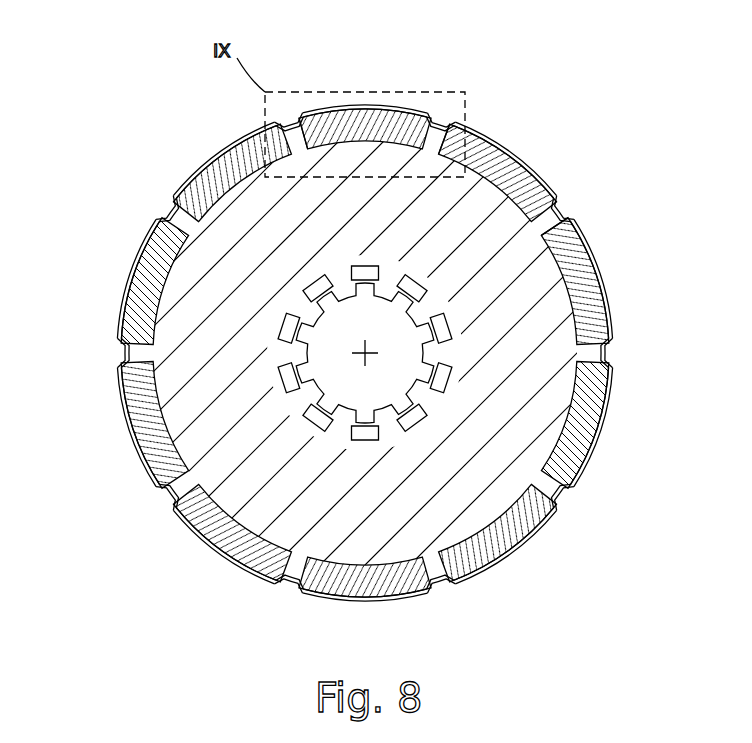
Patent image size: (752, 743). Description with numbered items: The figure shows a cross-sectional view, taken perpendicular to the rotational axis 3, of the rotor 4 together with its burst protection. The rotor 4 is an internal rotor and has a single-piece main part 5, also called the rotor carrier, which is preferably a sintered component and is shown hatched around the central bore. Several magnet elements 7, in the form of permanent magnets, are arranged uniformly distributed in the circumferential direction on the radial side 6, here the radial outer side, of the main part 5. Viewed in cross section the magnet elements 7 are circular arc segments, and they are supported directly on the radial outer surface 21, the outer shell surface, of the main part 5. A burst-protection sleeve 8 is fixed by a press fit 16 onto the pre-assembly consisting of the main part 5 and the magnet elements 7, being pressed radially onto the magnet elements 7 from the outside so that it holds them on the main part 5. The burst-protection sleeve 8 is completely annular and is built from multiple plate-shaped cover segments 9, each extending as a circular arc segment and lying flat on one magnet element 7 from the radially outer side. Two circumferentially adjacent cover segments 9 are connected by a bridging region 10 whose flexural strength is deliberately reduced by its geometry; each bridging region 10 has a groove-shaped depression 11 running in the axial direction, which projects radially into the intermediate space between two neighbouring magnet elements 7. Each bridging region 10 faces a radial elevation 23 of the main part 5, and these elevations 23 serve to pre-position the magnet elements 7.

The rotational axis 3 is at (380, 348).
The rotor 4 is at (147, 435).
The main part 5 is at (172, 452).
The radial side 6 is at (200, 183).
The magnet elements 7 is at (376, 371).
The burst-protection sleeve 8 is at (578, 226).
The cover segments 9 is at (376, 371).
The bridging region 10 is at (376, 371).
The groove-shaped depression 11 is at (290, 110).
The press fit 16 is at (376, 371).
The radial outer surface 21 is at (548, 180).
The radial elevation 23 is at (292, 140).